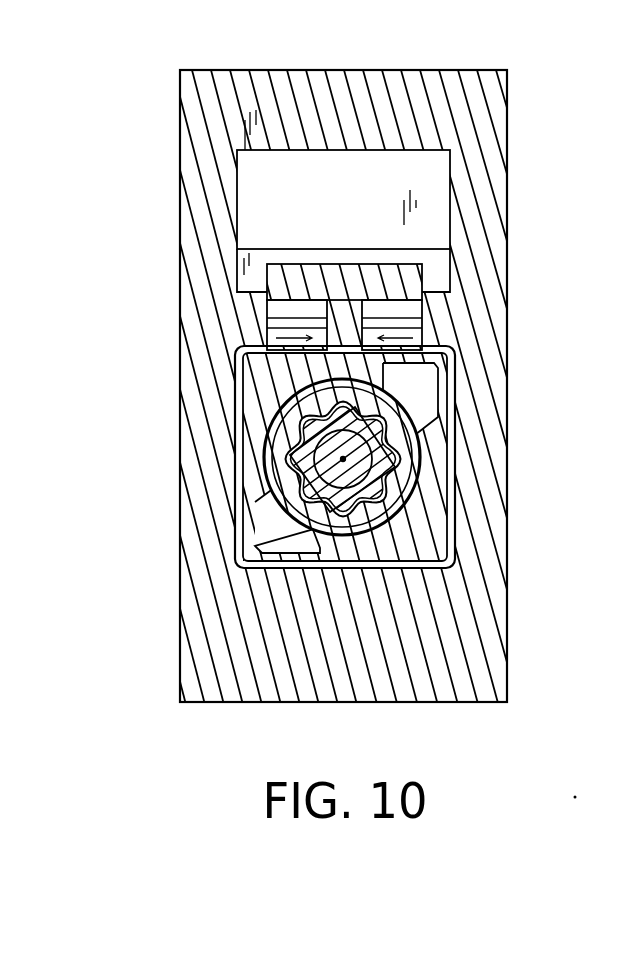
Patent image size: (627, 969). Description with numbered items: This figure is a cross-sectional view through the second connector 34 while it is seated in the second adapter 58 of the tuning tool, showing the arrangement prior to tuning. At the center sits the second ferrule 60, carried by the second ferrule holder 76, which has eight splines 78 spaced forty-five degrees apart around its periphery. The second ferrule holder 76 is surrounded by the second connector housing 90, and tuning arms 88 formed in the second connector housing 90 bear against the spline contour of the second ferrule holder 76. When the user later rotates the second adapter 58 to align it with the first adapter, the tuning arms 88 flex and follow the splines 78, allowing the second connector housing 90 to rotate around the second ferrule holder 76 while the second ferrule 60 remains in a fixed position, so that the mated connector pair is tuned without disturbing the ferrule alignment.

The second adapter 58 is at (278, 173).
The second connector 34 is at (256, 384).
The second ferrule holder 76 is at (290, 458).
The second ferrule 60 is at (357, 467).
The tuning arms 88 is at (422, 382).
The second connector housing 90 is at (453, 517).
The splines 78 is at (385, 540).